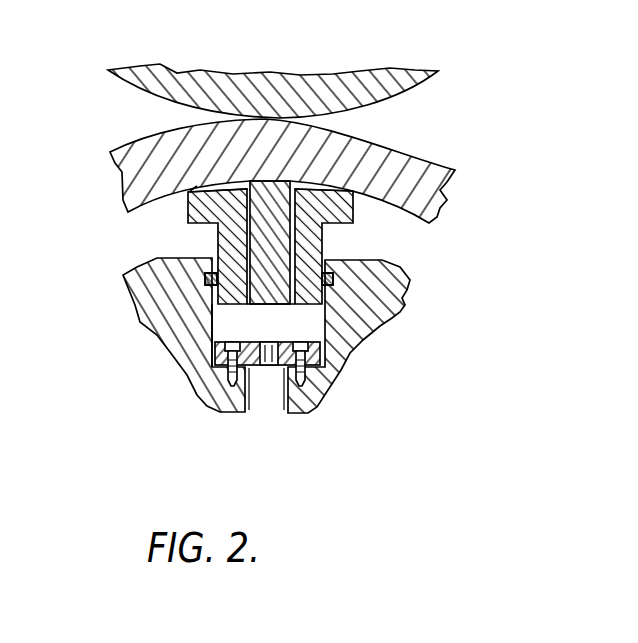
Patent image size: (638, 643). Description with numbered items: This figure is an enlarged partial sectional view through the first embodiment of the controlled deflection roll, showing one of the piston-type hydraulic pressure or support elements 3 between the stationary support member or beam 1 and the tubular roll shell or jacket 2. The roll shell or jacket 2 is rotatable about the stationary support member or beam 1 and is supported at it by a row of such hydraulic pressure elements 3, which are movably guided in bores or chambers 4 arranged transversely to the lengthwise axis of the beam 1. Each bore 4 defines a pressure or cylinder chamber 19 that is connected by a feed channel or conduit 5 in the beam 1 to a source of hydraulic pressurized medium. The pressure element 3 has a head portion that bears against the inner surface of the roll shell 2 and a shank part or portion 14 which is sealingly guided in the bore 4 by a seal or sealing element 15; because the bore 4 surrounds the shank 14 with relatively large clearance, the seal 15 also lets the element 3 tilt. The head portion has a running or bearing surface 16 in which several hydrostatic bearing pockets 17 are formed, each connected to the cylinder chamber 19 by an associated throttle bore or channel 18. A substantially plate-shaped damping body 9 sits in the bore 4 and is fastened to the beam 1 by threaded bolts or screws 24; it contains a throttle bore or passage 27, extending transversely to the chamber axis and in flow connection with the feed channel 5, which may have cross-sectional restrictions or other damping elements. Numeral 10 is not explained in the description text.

The stationary support member or beam 1 is at (380, 300).
The tubular roll shell or jacket 2 is at (443, 192).
The hydraulic pressure or support element 3 is at (247, 203).
The bore or chamber 4 is at (320, 318).
The feed channel or conduit 5 is at (262, 403).
The damping body 9 is at (210, 354).
The cover piece 10 is at (375, 78).
The shank part or portion 14 is at (313, 239).
The seal or sealing element 15 is at (207, 274).
The running or bearing surface 16 is at (195, 187).
The hydrostatic bearing pocket 17 is at (200, 191).
The throttle bore or channel 18 is at (242, 240).
The pressure or cylinder chamber 19 is at (226, 320).
The threaded bolt or screw 24 is at (226, 376).
The throttle bore or passage 27 is at (273, 366).